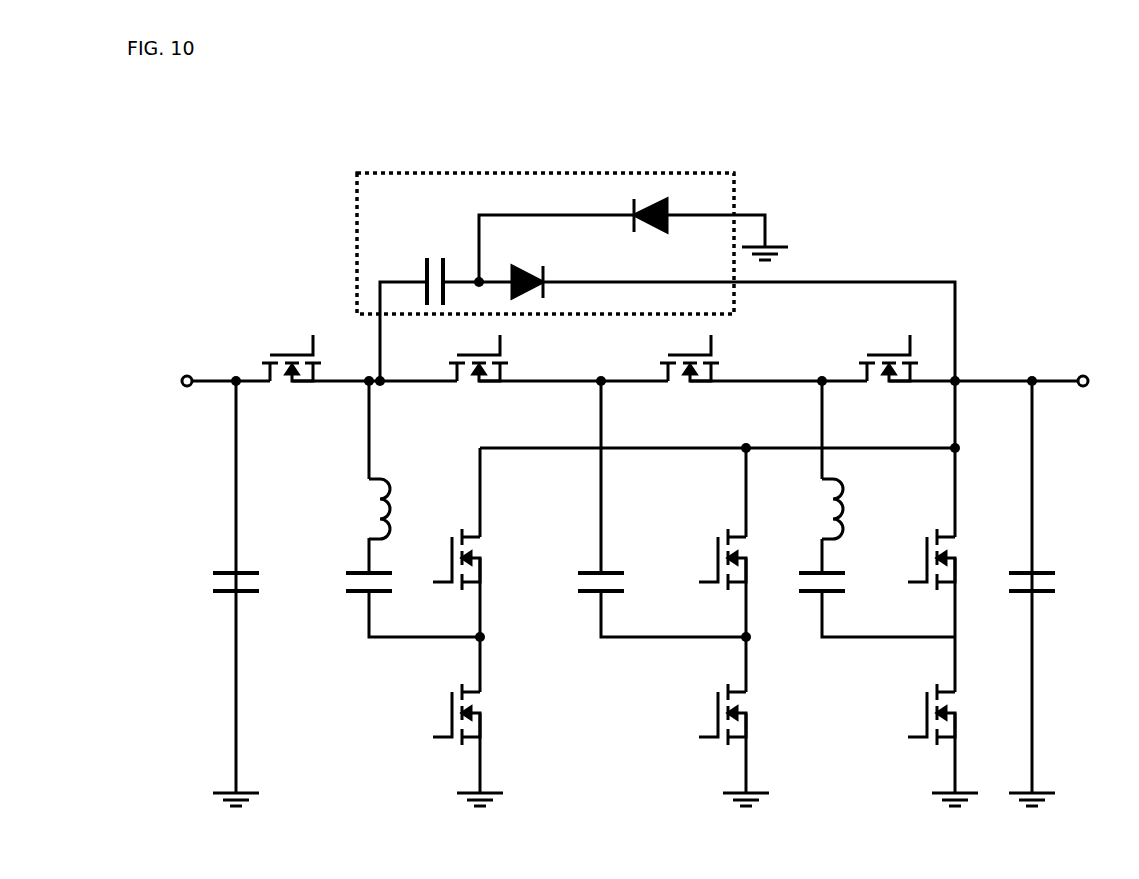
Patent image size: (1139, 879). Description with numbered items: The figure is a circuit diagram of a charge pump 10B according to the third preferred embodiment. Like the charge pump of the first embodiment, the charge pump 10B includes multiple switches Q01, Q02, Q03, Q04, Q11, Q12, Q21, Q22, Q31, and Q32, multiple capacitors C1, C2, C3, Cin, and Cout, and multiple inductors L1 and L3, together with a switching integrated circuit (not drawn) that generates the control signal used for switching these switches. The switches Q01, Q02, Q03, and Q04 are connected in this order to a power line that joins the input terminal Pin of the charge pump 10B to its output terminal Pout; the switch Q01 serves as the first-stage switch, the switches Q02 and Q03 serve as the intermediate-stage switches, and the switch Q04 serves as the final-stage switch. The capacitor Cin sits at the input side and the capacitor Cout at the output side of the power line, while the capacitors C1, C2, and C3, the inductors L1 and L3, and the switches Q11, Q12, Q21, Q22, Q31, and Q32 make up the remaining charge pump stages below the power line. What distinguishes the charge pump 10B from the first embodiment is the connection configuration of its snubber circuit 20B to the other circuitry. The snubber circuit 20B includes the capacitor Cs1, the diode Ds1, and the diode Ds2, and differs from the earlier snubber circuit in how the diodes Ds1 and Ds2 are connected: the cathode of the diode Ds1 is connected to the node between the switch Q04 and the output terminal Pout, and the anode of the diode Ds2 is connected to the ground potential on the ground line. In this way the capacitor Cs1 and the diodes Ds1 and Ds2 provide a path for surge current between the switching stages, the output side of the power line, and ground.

The charge pump 10B is at (245, 175).
The snubber circuit 20B is at (733, 192).
The input terminal Pin is at (181, 367).
The output terminal Pout is at (1086, 367).
The switch Q01 is at (280, 355).
The switch Q02 is at (468, 356).
The switch Q03 is at (678, 356).
The switch Q04 is at (877, 356).
The switch Q11 is at (453, 544).
The switch Q12 is at (441, 725).
The switch Q21 is at (719, 545).
The switch Q22 is at (709, 725).
The switch Q31 is at (929, 546).
The switch Q32 is at (918, 727).
The capacitor Cin is at (249, 597).
The capacitor Cout is at (1048, 597).
The capacitor C1 is at (363, 597).
The capacitor C2 is at (595, 597).
The capacitor C3 is at (816, 599).
The inductor L1 is at (392, 496).
The inductor L3 is at (844, 498).
The capacitor Cs1 is at (434, 268).
The diode Ds1 is at (533, 265).
The diode Ds2 is at (659, 231).